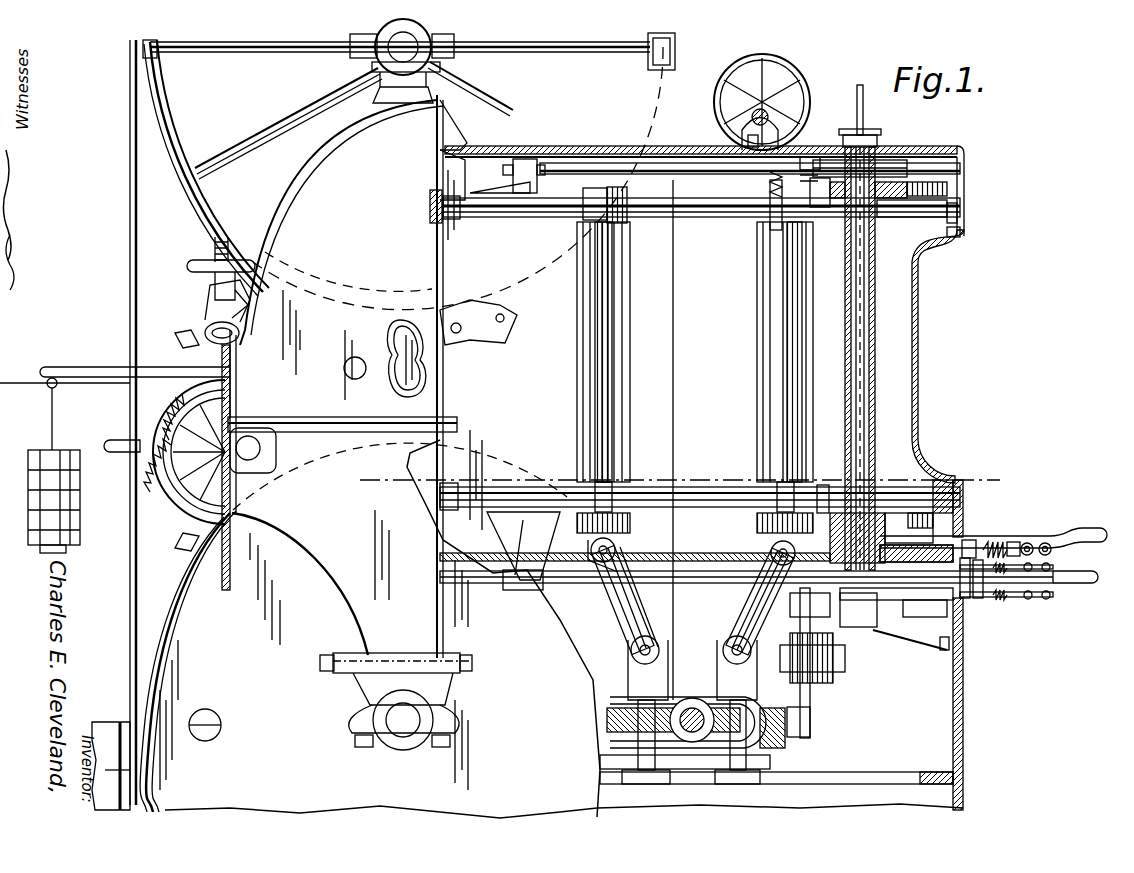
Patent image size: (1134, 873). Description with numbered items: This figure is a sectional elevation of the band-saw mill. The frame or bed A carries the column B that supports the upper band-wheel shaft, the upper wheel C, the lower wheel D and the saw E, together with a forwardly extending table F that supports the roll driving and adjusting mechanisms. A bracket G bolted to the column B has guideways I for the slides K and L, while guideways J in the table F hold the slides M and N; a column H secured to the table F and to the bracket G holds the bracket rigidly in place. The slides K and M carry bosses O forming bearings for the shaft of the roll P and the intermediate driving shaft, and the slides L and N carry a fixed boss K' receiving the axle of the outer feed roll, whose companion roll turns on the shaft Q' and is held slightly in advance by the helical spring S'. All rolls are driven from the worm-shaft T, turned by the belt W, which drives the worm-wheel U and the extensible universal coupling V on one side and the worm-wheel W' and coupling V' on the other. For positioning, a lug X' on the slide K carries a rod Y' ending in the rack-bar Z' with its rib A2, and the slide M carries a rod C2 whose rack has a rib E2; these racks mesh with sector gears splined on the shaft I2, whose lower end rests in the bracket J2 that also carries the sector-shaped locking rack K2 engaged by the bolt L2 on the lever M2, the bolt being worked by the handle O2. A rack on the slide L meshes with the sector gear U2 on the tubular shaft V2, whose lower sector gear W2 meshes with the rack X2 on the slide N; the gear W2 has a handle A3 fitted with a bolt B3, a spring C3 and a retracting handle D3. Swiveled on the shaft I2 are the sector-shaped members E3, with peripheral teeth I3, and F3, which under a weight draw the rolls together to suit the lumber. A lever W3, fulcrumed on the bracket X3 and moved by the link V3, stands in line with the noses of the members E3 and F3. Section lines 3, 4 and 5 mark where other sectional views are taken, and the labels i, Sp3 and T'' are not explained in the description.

The frame or bed A is at (440, 460).
The column B is at (443, 225).
The upper wheel C is at (212, 213).
The lower wheel D is at (188, 661).
The saw E is at (128, 590).
The bed or table F is at (703, 512).
The bracket or casting G is at (733, 187).
The column H is at (897, 302).
The guideways or channels I is at (688, 213).
The guideways J is at (647, 493).
The slide K is at (701, 224).
The fixed boss K' is at (681, 238).
The slide L is at (903, 213).
The slide M is at (760, 350).
The slide N is at (817, 493).
The bosses O is at (623, 220).
The feed roll P is at (593, 337).
The shaft Q' is at (759, 541).
The helical spring S' is at (784, 201).
The worm-shaft T is at (687, 752).
The worm-wheel U is at (613, 727).
The extensible universal coupling V is at (623, 661).
The extensible universal coupling V' is at (745, 666).
The belt W is at (652, 719).
The lug or bracket X' is at (523, 354).
The rod Y' is at (750, 146).
The rack-bar Z' is at (704, 175).
The rib A2 is at (893, 167).
The sector gear U2 is at (925, 187).
The ring i is at (966, 191).
The shaft I2 is at (857, 357).
The tubular shaft V2 is at (877, 382).
The sector gear W2 is at (897, 518).
The rack X2 is at (960, 493).
The sector-shaped member F3 is at (958, 507).
The sector-shaped member E3 is at (948, 545).
The latch or bolt B3 is at (947, 543).
The spring C3 is at (980, 545).
The handle or lever A3 is at (1023, 540).
The retracting handle D3 is at (1100, 540).
The handle O2 is at (1075, 584).
The bolt L2 is at (968, 596).
The sector-shaped locking rack K2 is at (962, 642).
The lever M2 is at (896, 606).
The bracket J2 is at (934, 662).
The rib E2 is at (893, 605).
The teeth I3 is at (847, 610).
The bracket X3 is at (835, 683).
The lever W3 is at (800, 697).
The link V3 is at (797, 727).
The worm-wheel W' is at (772, 742).
The rod C2 is at (701, 600).
The spring rod Sp3 is at (603, 532).
The spring T'' is at (823, 143).
The section line 3 is at (356, 480).
The section line 4 is at (790, 143).
The section line 5 is at (860, 665).